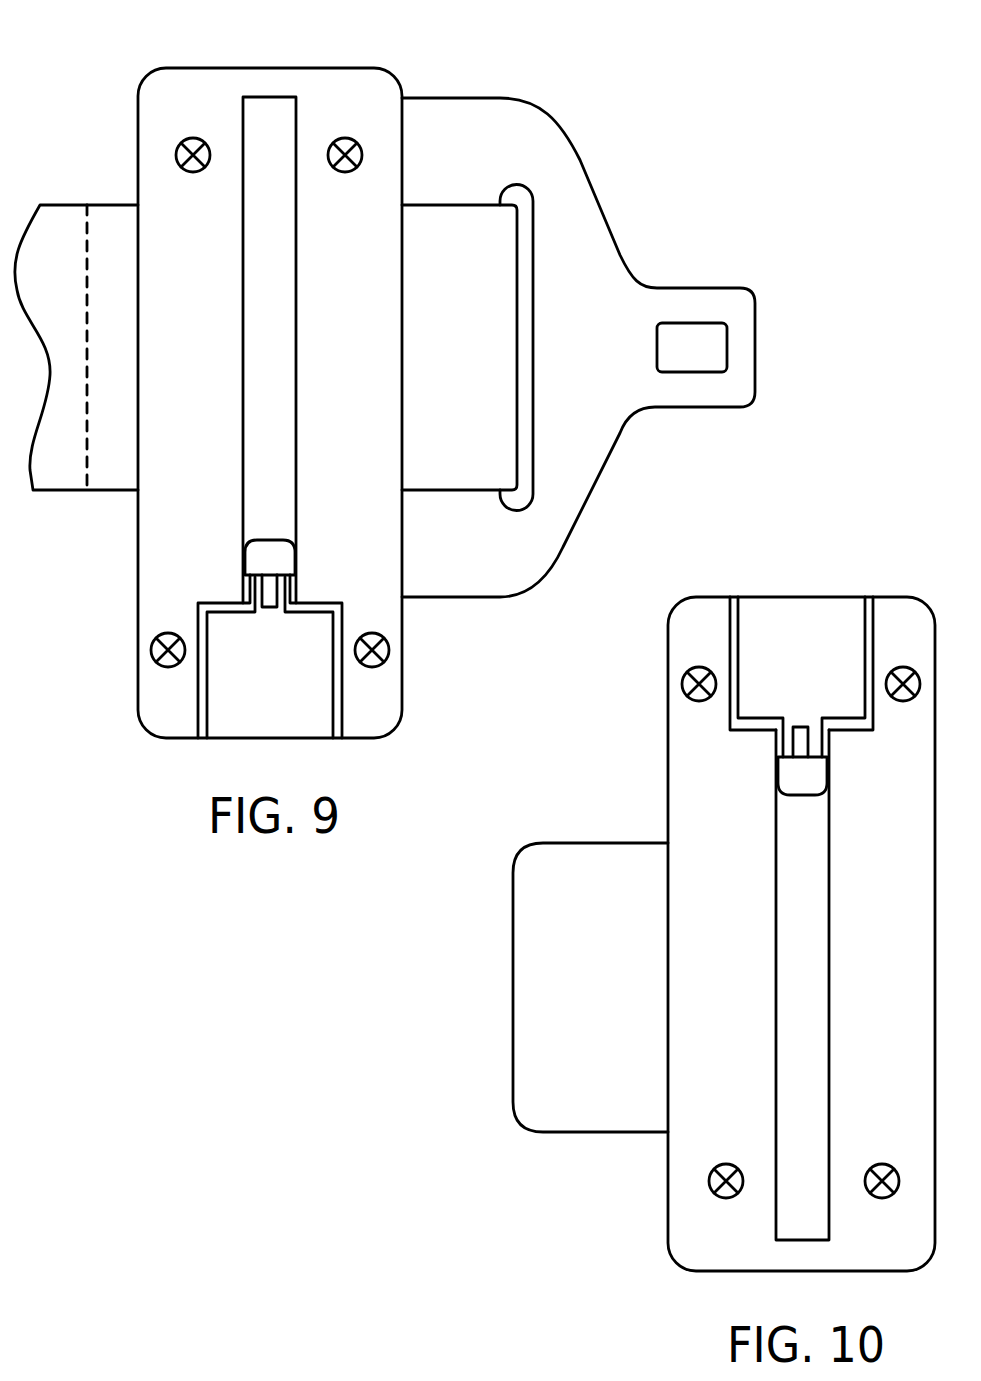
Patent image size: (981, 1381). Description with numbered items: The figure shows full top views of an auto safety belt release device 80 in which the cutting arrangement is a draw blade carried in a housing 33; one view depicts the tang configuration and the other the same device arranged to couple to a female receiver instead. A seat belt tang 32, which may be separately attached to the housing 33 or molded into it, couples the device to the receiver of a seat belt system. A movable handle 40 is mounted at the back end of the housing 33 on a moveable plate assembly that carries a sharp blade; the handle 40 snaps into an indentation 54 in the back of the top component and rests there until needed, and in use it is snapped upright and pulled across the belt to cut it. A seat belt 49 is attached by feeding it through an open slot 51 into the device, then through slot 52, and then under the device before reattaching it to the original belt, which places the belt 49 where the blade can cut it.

In FIG. 9, the housing 33 is at (203, 68).
In FIG. 10, the housing 33 is at (724, 934).
In FIG. 9, the seat belt 49 is at (130, 356).
In FIG. 9, the auto safety belt release device 80 is at (652, 177).
In FIG. 9, the seat belt tang 32 is at (715, 288).
In FIG. 9, the slot 52 is at (450, 205).
In FIG. 9, the movable handle 40 is at (250, 690).
In FIG. 10, the movable handle 40 is at (786, 668).
In FIG. 9, the open slot 51 is at (337, 690).
In FIG. 10, the indentation 54 is at (870, 650).